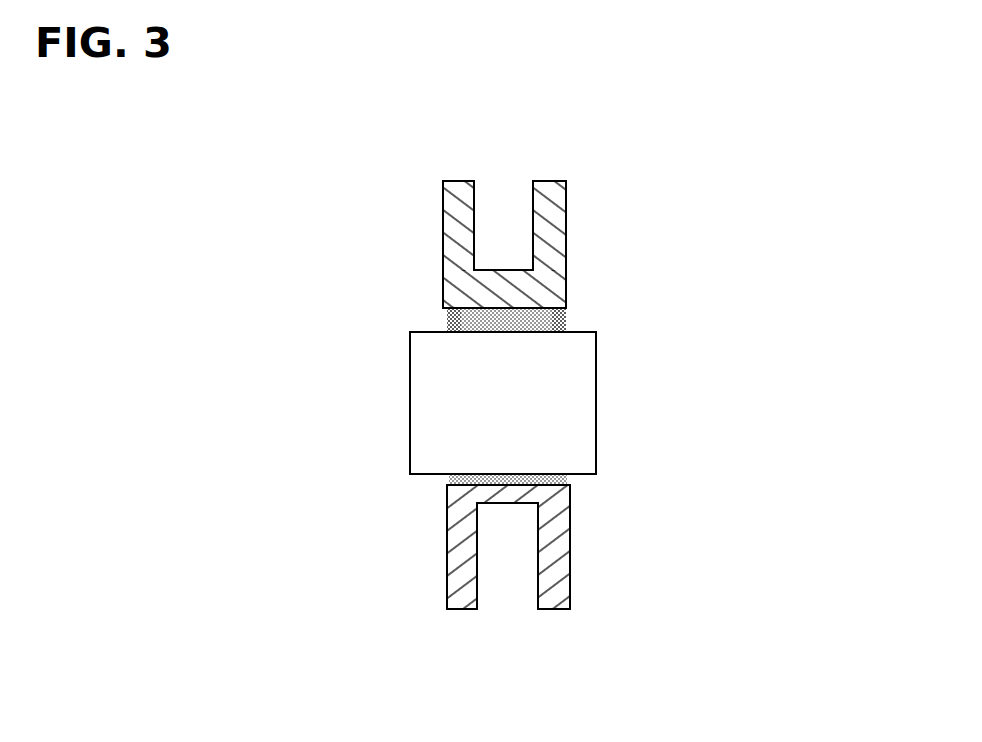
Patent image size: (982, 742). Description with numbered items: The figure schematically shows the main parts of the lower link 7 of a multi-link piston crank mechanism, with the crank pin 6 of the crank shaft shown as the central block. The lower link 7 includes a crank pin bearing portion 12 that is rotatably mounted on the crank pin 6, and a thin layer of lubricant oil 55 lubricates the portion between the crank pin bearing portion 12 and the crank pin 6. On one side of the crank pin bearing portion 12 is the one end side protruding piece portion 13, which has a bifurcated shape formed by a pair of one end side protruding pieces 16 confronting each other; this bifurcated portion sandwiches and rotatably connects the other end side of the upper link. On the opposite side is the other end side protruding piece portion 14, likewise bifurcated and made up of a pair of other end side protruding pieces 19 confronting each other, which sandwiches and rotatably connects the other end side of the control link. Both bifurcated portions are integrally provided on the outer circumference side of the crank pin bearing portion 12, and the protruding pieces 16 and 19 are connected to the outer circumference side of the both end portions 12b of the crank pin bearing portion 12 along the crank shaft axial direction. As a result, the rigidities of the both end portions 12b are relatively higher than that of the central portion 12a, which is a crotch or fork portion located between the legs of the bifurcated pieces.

The crank pin 6 is at (425, 400).
The lower link 7 is at (424, 239).
The crank pin bearing portion 12 is at (529, 484).
The central portion 12a is at (505, 312).
The both end portions 12b is at (448, 317).
The one end side protruding piece portion 13 is at (553, 104).
The other end side protruding piece portion 14 is at (553, 668).
The one end side protruding pieces 16 is at (458, 190).
The other end side protruding pieces 19 is at (468, 602).
The lubricant oil 55 is at (442, 318).